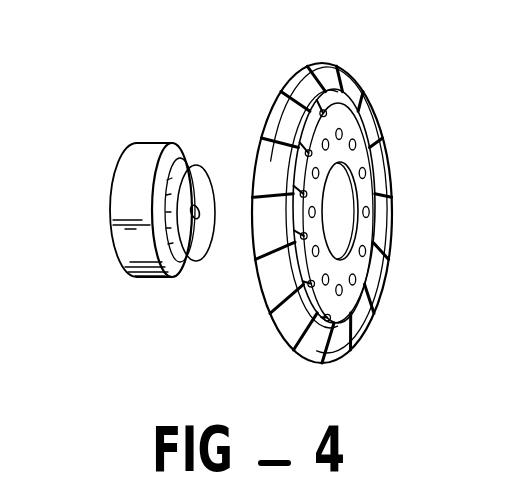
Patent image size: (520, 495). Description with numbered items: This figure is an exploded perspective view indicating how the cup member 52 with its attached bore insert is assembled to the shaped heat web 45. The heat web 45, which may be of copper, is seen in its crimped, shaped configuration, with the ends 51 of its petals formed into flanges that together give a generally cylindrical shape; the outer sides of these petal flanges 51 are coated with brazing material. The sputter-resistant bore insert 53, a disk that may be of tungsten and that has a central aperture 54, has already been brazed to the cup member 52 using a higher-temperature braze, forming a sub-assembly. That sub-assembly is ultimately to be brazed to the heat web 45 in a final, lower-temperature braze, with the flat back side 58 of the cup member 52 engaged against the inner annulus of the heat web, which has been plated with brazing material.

The heat web 45 is at (384, 102).
The ends of the petals 51 is at (282, 117).
The cup member 52 is at (141, 133).
The bore insert 53 is at (198, 167).
The central aperture 54 is at (198, 218).
The flat back side 58 is at (180, 267).